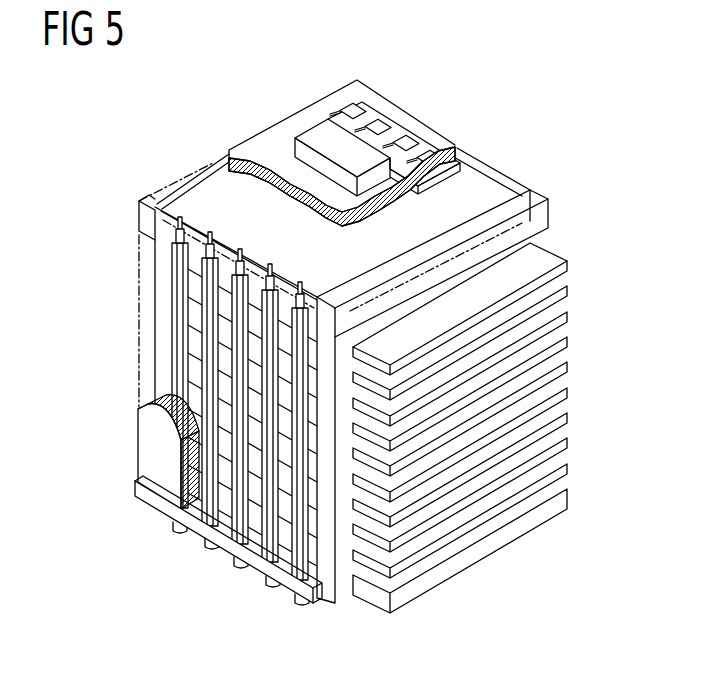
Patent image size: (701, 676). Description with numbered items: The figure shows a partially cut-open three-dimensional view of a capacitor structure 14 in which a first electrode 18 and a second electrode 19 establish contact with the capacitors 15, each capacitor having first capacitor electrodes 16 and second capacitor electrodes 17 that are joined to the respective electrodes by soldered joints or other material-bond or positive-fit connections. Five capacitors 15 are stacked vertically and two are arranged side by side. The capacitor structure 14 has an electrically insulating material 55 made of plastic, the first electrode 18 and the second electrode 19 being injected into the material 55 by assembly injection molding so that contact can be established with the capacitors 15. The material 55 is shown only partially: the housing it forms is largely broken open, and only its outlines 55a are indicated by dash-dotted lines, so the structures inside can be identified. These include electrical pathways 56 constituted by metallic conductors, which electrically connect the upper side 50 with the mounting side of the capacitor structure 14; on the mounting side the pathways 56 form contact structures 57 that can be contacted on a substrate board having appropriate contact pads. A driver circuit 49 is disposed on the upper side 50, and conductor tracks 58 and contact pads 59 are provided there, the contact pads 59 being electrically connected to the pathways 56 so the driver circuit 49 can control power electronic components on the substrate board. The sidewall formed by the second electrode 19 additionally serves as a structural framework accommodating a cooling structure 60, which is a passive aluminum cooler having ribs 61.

The capacitor structure 14 is at (512, 96).
The capacitors 15 is at (473, 187).
The first capacitor electrodes 16 is at (217, 183).
The second capacitor electrodes 17 is at (498, 202).
The first electrode 18 is at (161, 290).
The second electrode 19 is at (325, 548).
The driver circuit 49 is at (320, 137).
The upper side 50 is at (277, 143).
The electrically insulating material 55 is at (126, 447).
The outlines 55a is at (152, 192).
The electrical pathways 56 is at (297, 538).
The contact structures 57 is at (213, 513).
The conductor tracks 58 is at (333, 115).
The contact pads 59 is at (385, 120).
The cooling structure 60 is at (494, 575).
The ribs 61 is at (567, 388).